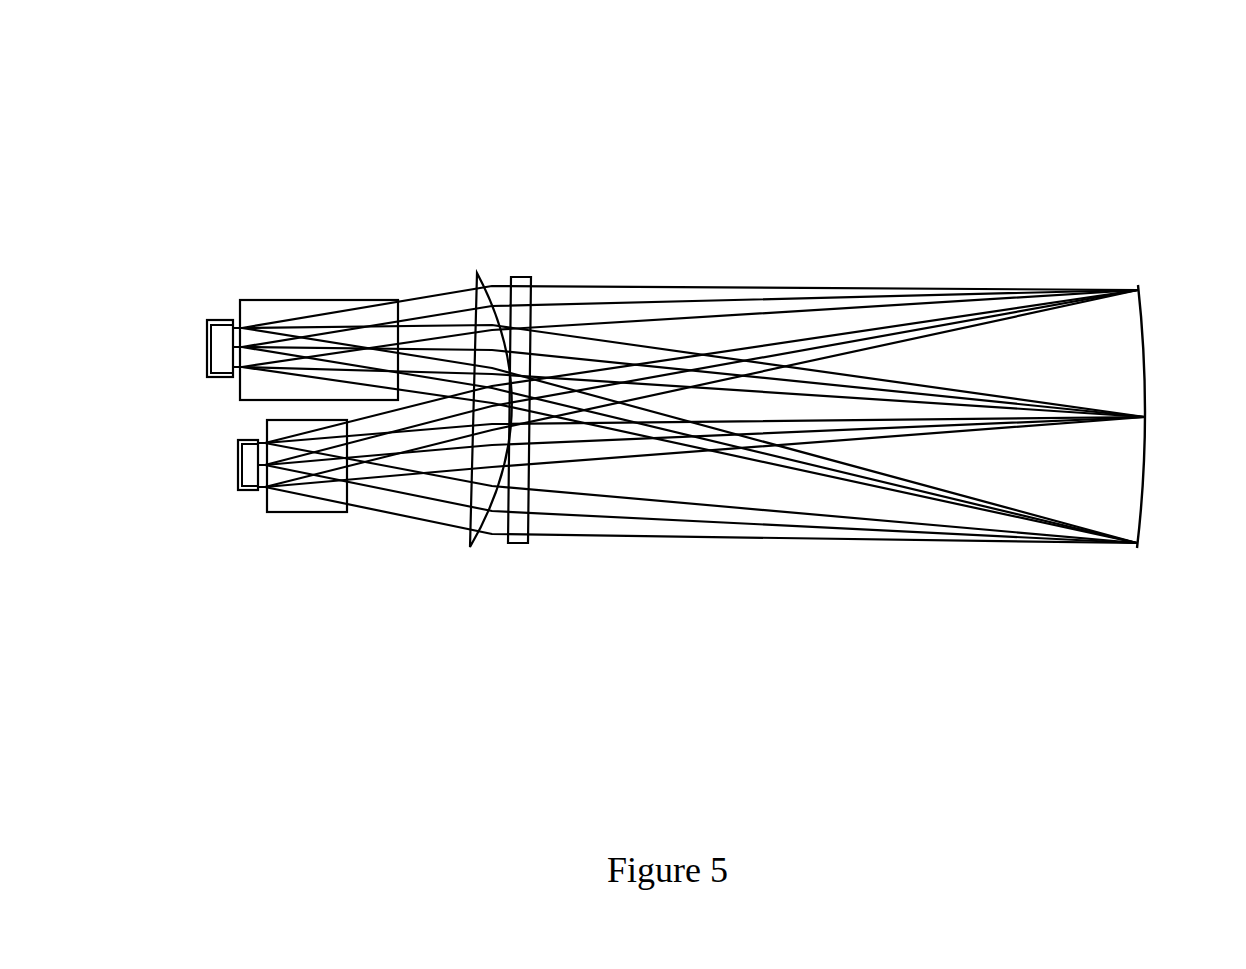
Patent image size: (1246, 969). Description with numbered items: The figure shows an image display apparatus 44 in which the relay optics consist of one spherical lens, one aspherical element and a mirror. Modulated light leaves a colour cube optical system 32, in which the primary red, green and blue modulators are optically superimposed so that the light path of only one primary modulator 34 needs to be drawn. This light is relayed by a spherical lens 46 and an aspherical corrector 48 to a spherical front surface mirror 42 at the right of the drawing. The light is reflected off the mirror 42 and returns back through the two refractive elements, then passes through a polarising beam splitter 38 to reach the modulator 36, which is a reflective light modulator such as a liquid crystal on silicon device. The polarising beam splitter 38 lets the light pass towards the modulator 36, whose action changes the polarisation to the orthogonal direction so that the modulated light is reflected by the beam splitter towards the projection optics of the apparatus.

The colour cube optical system 32 is at (318, 300).
The primary modulator 34 is at (207, 341).
The modulator 36 is at (238, 462).
The polarising beam splitter 38 is at (316, 512).
The mirror 42 is at (1145, 400).
The image display apparatus 44 is at (343, 132).
The spherical lens 46 is at (477, 272).
The aspherical corrector 48 is at (531, 278).